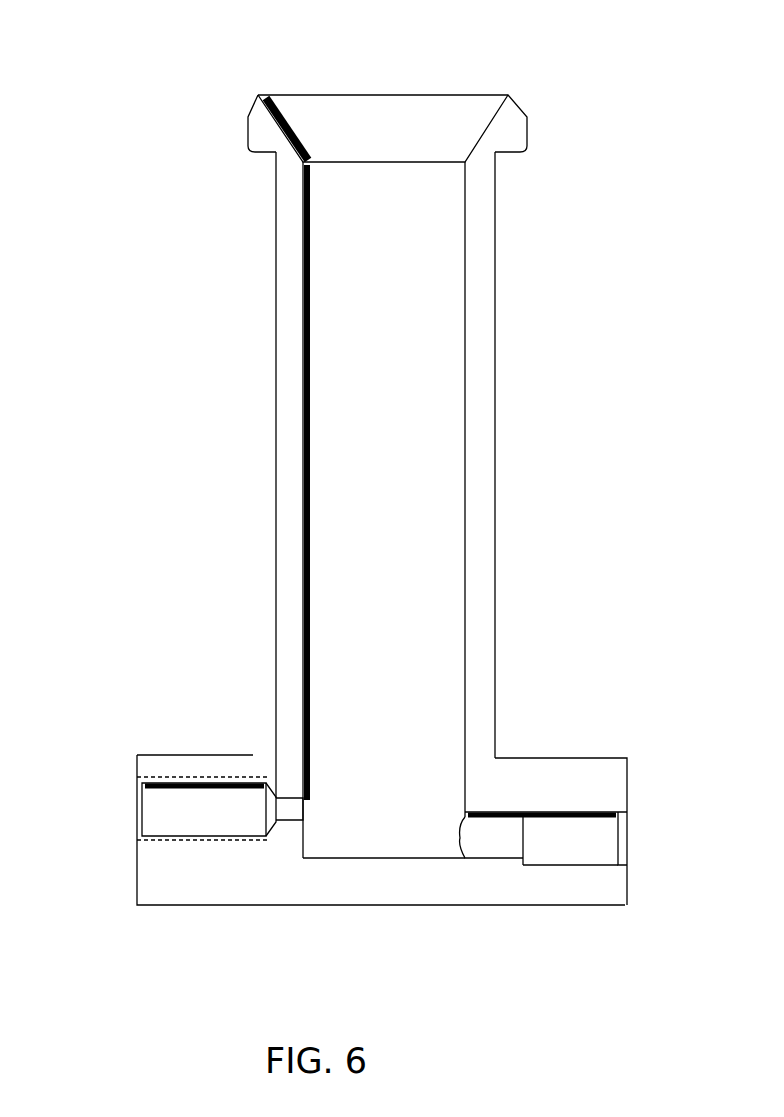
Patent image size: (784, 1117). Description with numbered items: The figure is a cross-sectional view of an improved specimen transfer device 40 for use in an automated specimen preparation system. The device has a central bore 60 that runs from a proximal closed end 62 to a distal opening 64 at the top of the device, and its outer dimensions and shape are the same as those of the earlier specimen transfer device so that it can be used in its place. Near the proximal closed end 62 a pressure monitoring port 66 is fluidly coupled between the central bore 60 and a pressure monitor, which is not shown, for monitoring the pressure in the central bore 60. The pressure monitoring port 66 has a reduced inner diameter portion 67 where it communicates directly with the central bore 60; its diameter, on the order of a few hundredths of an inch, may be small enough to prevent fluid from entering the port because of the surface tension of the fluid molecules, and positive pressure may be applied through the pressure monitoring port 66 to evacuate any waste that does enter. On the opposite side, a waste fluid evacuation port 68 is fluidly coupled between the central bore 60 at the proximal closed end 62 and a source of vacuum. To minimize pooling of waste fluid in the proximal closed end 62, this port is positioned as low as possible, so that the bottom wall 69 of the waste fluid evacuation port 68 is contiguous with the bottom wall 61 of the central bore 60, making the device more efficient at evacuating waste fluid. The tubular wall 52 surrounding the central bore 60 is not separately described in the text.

The specimen transfer device 40 is at (628, 417).
The tubular body 52 is at (478, 335).
The central bore 60 is at (432, 280).
The distal opening 64 is at (477, 112).
The bottom wall of the central bore 61 is at (358, 858).
The proximal closed end 62 is at (427, 848).
The pressure monitoring port 66 is at (148, 800).
The reduced inner diameter portion 67 is at (288, 807).
The waste fluid evacuation port 68 is at (610, 832).
The bottom wall of the waste fluid evacuation port 69 is at (570, 867).